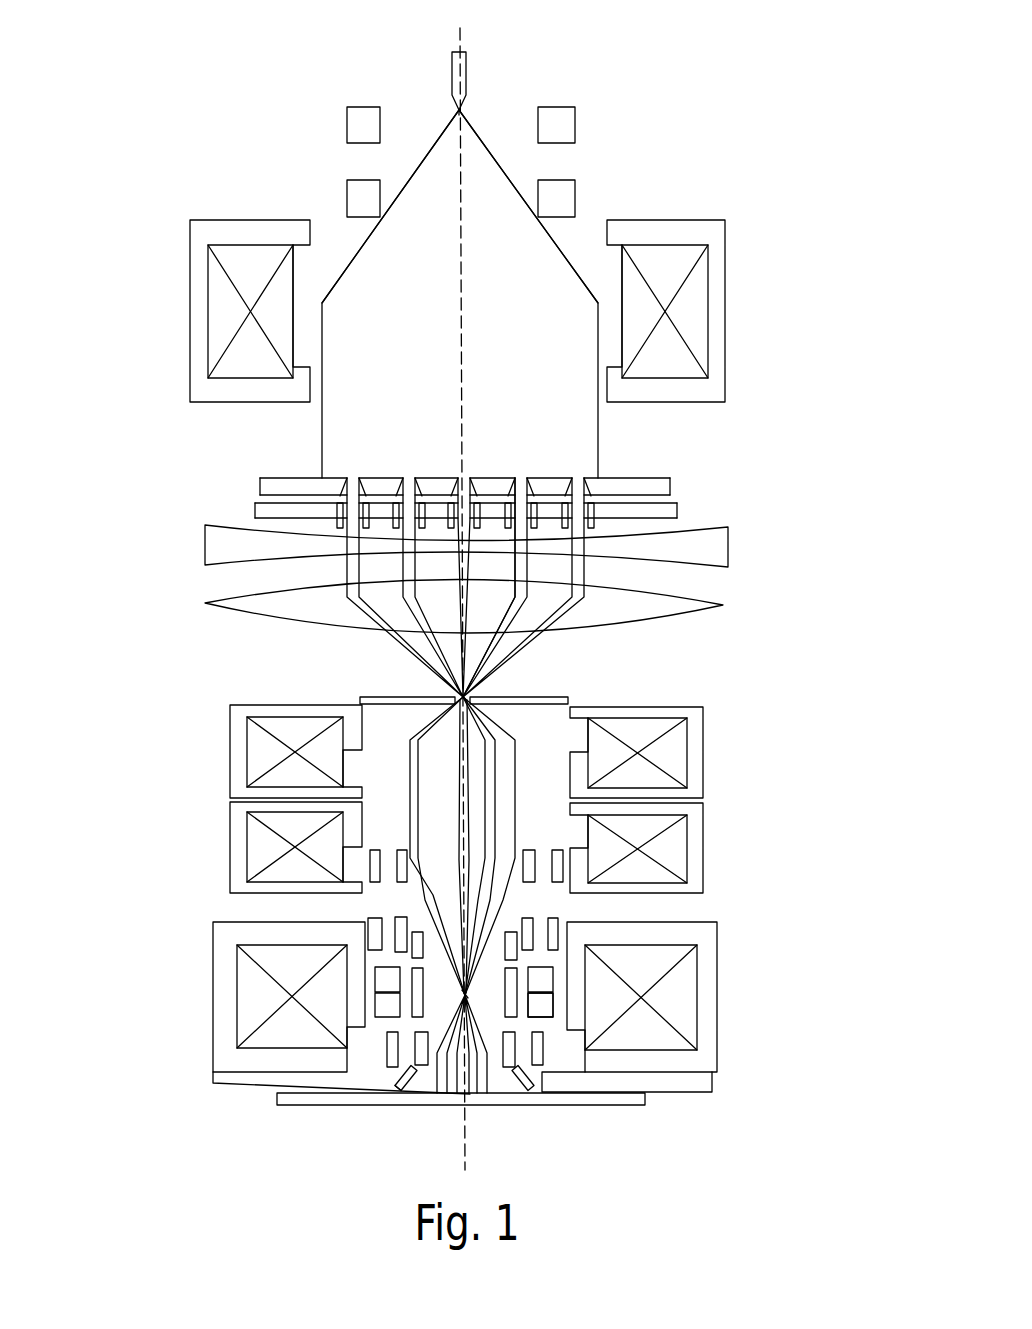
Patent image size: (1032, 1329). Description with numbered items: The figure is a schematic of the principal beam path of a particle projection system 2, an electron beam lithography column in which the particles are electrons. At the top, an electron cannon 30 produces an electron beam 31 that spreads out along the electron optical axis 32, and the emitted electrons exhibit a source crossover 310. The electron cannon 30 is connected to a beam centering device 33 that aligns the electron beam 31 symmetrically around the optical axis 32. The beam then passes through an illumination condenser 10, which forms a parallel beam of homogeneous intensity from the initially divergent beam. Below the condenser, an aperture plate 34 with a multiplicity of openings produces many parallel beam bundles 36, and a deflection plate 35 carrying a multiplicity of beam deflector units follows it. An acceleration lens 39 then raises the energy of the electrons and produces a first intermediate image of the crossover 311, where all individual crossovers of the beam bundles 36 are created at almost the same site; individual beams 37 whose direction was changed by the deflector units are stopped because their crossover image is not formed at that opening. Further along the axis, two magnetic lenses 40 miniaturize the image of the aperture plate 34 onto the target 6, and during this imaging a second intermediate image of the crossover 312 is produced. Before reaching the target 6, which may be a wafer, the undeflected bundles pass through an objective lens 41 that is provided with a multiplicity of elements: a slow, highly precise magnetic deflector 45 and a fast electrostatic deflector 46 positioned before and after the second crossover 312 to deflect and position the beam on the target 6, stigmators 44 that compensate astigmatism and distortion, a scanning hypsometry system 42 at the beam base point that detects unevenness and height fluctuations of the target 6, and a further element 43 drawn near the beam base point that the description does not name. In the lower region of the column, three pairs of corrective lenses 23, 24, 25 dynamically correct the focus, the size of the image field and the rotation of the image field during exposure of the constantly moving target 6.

The particle projection system 2 is at (212, 446).
The target 6 is at (545, 1073).
The illumination condenser 10 is at (190, 247).
The corrective lens 23 is at (402, 850).
The corrective lens 24 is at (375, 935).
The corrective lens 25 is at (413, 1073).
The electron cannon 30 is at (466, 60).
The electron beam 31 is at (447, 163).
The source crossover 310 is at (466, 100).
The first intermediate image of the crossover 311 is at (462, 695).
The second intermediate image of the crossover 312 is at (462, 992).
The electron optical axis 32 is at (458, 348).
The beam centering device 33 is at (358, 197).
The aperture plate 34 is at (660, 497).
The deflection plate 35 is at (660, 512).
The beam bundle 36 is at (407, 492).
The individual beam 37 is at (512, 482).
The acceleration lens 39 is at (227, 540).
The magnetic lens 40 is at (230, 743).
The objective lens 41 is at (725, 928).
The scanning hypsometry system 42 is at (555, 995).
The electrode 43 is at (400, 1090).
The stigmator 44 is at (393, 975).
The deflector 45 is at (510, 1002).
The deflector 46 is at (512, 946).